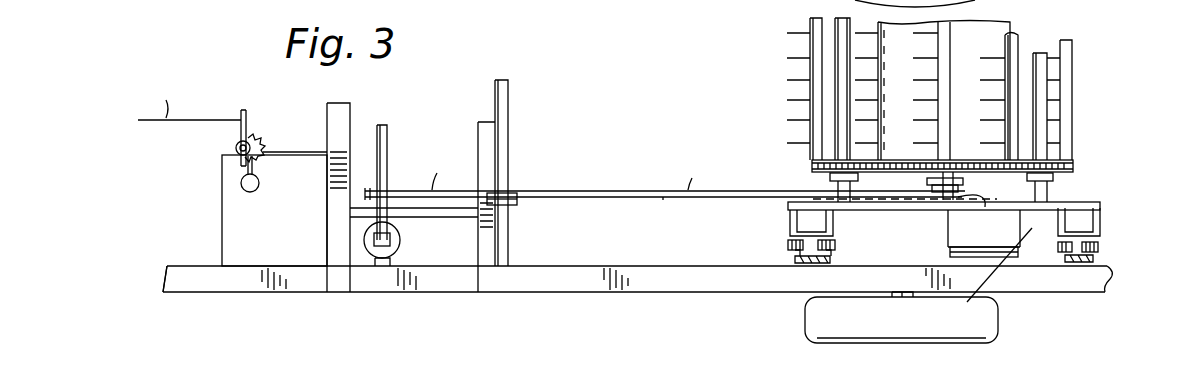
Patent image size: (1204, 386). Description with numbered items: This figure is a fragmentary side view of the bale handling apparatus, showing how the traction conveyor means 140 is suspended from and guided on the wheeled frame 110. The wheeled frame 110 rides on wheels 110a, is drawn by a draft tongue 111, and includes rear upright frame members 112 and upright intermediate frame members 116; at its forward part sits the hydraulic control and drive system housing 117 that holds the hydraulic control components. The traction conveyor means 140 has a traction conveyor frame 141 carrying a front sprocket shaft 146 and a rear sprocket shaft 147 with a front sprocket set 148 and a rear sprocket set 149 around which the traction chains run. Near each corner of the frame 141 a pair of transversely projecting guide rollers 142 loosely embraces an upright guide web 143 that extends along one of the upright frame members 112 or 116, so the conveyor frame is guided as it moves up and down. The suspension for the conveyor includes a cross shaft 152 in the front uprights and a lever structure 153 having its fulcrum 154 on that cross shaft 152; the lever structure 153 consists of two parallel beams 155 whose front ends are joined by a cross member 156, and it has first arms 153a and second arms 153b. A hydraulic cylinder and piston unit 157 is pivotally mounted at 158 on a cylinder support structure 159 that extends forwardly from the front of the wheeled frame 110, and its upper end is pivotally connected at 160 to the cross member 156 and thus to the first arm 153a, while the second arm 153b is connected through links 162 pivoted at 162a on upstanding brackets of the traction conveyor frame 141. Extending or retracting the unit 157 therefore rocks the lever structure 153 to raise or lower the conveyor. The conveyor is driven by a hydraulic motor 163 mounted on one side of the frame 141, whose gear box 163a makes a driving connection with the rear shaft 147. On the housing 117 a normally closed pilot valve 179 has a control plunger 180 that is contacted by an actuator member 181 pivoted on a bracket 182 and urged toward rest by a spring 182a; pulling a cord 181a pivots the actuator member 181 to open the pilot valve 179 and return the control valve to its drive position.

The wheeled frame 110 is at (618, 300).
The wheels 110a is at (823, 328).
The draft tongue 111 is at (240, 285).
The rear upright frame members 112 is at (1112, 275).
The upright intermediate frame members 116 is at (818, 262).
The hydraulic control and drive system housing 117 is at (233, 230).
The traction conveyor means 140 is at (778, 108).
The traction conveyor frame 141 is at (803, 208).
The guide rollers 142 is at (790, 250).
The upright guide web 143 is at (805, 260).
The front sprocket shaft 146 is at (847, 148).
The rear sprocket shaft 147 is at (1043, 193).
The front sprocket set 148 is at (830, 176).
The rear sprocket set 149 is at (1073, 160).
The cross shaft 152 is at (508, 150).
The lever structure 153 is at (613, 187).
The first arms 153a is at (434, 169).
The second arms 153b is at (692, 169).
The fulcrum 154 is at (512, 185).
The parallel beams 155 is at (663, 198).
The cross member 156 is at (387, 130).
The hydraulic cylinder and piston unit 157 is at (398, 242).
The pivot 158 is at (402, 266).
The cylinder support structure 159 is at (358, 210).
The pivot 160 is at (372, 240).
The links 162 is at (967, 182).
The pivot 162a is at (942, 200).
The hydraulic motor 163 is at (950, 250).
The gear box 163a is at (979, 281).
The pilot valve 179 is at (260, 184).
The control plunger 180 is at (266, 156).
The actuator member 181 is at (240, 118).
The cord 181a is at (177, 94).
The bracket 182 is at (233, 148).
The spring 182a is at (262, 140).